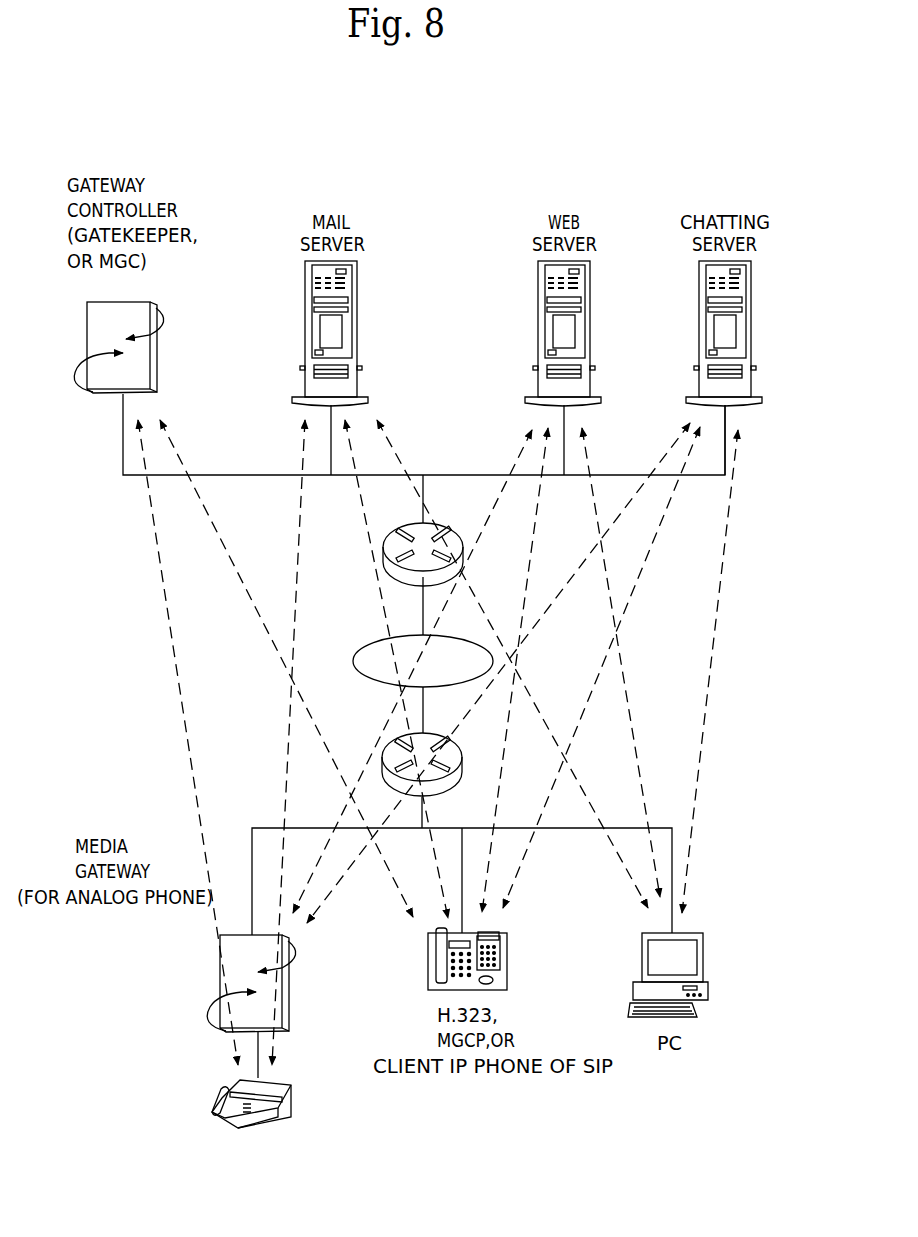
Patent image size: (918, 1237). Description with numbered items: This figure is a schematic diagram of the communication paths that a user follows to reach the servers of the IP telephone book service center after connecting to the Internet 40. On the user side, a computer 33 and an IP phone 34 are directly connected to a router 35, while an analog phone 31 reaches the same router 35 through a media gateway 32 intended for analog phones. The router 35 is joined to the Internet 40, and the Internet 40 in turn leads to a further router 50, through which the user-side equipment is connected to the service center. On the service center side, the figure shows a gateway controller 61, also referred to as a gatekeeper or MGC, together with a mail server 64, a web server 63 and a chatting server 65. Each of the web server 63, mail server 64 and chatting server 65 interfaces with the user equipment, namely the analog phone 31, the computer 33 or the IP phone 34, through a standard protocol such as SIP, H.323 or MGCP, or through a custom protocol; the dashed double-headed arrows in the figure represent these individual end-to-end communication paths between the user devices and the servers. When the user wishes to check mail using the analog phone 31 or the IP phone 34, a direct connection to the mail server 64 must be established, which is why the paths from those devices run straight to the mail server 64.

The gateway controller 61 is at (157, 344).
The mail server 64 is at (357, 313).
The web server 63 is at (590, 311).
The chatting server 65 is at (751, 311).
The router 50 is at (440, 525).
The Internet 40 is at (466, 637).
The router 35 is at (447, 743).
The media gateway 32 is at (283, 982).
The analog phone 31 is at (292, 1090).
The IP phone 34 is at (507, 960).
The computer 33 is at (703, 945).